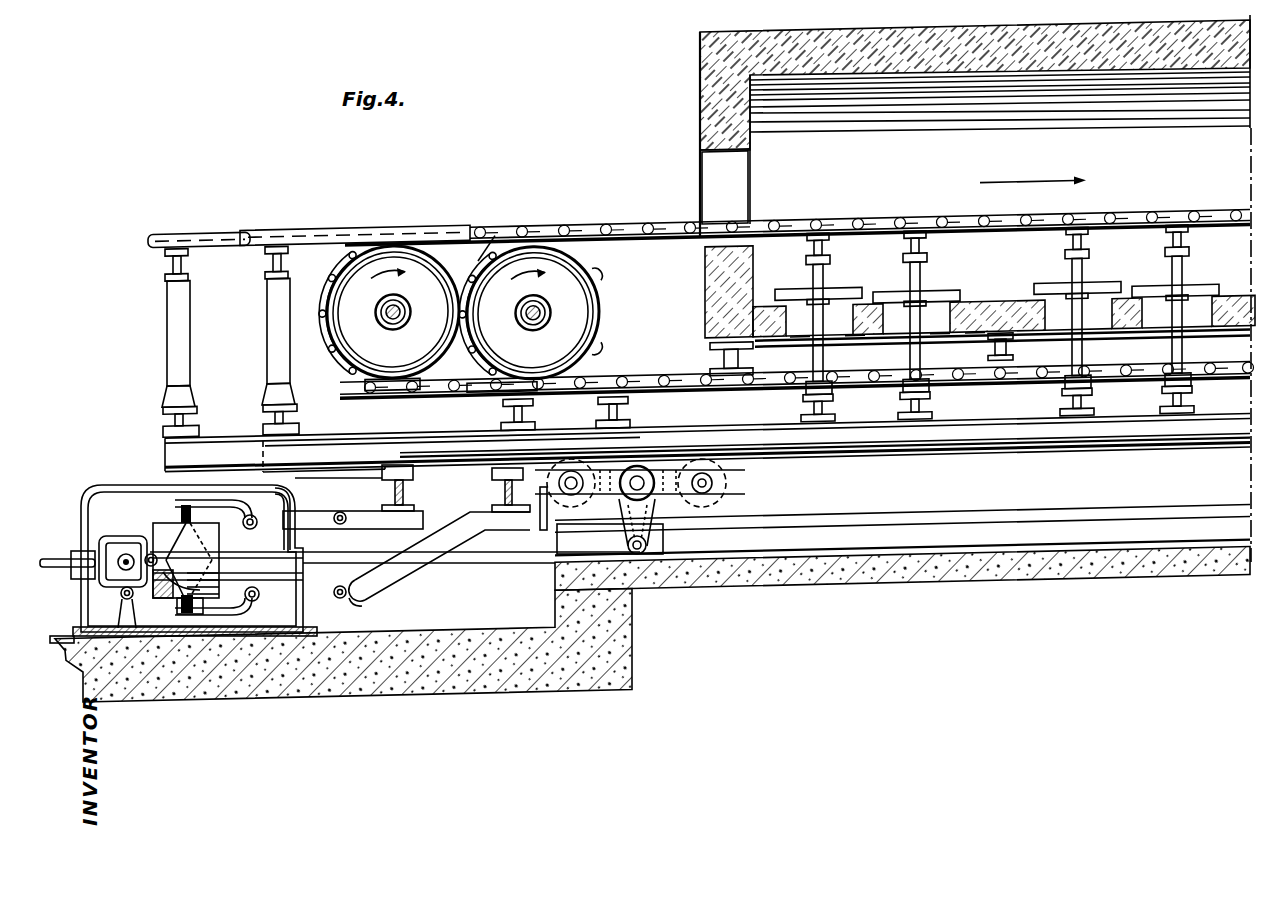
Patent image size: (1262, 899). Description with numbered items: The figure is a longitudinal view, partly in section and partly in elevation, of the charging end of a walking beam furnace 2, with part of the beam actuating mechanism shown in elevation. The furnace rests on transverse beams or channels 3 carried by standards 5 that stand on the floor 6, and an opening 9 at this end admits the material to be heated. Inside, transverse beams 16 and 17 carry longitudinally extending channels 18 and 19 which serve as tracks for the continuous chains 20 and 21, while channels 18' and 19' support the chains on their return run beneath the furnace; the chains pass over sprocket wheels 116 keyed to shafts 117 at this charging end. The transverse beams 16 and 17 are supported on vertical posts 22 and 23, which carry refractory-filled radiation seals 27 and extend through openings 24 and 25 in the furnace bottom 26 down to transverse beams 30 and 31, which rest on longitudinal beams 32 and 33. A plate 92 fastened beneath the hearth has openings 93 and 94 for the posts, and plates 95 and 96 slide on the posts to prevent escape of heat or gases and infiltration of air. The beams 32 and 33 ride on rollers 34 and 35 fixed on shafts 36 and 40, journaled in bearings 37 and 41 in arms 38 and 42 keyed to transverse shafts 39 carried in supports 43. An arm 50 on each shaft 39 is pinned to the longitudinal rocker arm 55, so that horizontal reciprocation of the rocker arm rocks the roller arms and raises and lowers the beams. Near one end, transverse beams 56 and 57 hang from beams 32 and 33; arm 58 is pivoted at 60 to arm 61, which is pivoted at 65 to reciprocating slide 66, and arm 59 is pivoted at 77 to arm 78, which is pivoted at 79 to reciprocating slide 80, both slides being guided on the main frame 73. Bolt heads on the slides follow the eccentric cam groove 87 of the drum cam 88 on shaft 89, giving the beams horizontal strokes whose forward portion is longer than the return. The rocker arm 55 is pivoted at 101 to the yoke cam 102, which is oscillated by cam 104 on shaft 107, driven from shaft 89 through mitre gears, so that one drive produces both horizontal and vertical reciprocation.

The furnace 2 is at (936, 31).
The transverse beams or channels 3 is at (712, 355).
The standards 5 is at (1090, 517).
The floor 6 is at (1138, 566).
The opening 9 is at (718, 180).
The transverse beams 16 is at (806, 246).
The transverse beams 17 is at (928, 247).
The longitudinally extending beams or channels 18 is at (860, 204).
The channels 18' is at (795, 360).
The longitudinally extending beams or channels 19 is at (699, 240).
The channels 19' is at (795, 402).
The chains 20 is at (872, 222).
The chains 21 is at (450, 380).
The vertically extending posts 22 is at (824, 272).
The vertically extending posts 23 is at (908, 280).
The openings 24 is at (949, 311).
The openings 25 is at (1047, 309).
The bottom 26 is at (975, 312).
The radiation seals 27 is at (800, 291).
The beams 30 is at (813, 410).
The beams 31 is at (910, 410).
The longitudinally extending beams 32 is at (980, 448).
The longitudinally extending beams 33 is at (1032, 452).
The rollers 34 is at (548, 492).
The rollers 35 is at (750, 490).
The shafts 36 is at (571, 478).
The bearings 37 is at (548, 508).
The arms 38 is at (592, 498).
The transversely extending shafts 39 is at (638, 476).
The shafts 40 is at (725, 483).
The bearings 41 is at (718, 499).
The arms 42 is at (672, 480).
The supports 43 is at (652, 548).
The arm 50 is at (615, 533).
The longitudinally extending arm (rocker arm or rod) 55 is at (840, 545).
The transversely extending beam 56 is at (412, 493).
The transversely extending beam 57 is at (502, 497).
The arm 58 is at (385, 518).
The arm 59 is at (405, 563).
The pivotal connection 60 is at (338, 512).
The arm 61 is at (296, 505).
The pivotal connection 65 is at (216, 526).
The reciprocating slide 66 is at (192, 522).
The main frame 73 is at (75, 583).
The pivotal mounting 77 is at (370, 607).
The arm 78 is at (335, 597).
The pivotal attachment 79 is at (229, 606).
The reciprocating slide 80 is at (220, 613).
The cam groove 87 is at (173, 611).
The drum cam 88 is at (220, 573).
The shaft 89 is at (50, 557).
The plate 92 is at (1002, 351).
The openings 93 is at (806, 350).
The openings 94 is at (928, 350).
The plates 95 is at (845, 350).
The plates 96 is at (968, 350).
The pivotal connection 101 is at (152, 522).
The yoke cam 102 is at (122, 540).
The cam 104 is at (120, 575).
The shaft 107 is at (121, 588).
The sprocket wheels 116 is at (355, 338).
The shafts 117 is at (380, 305).